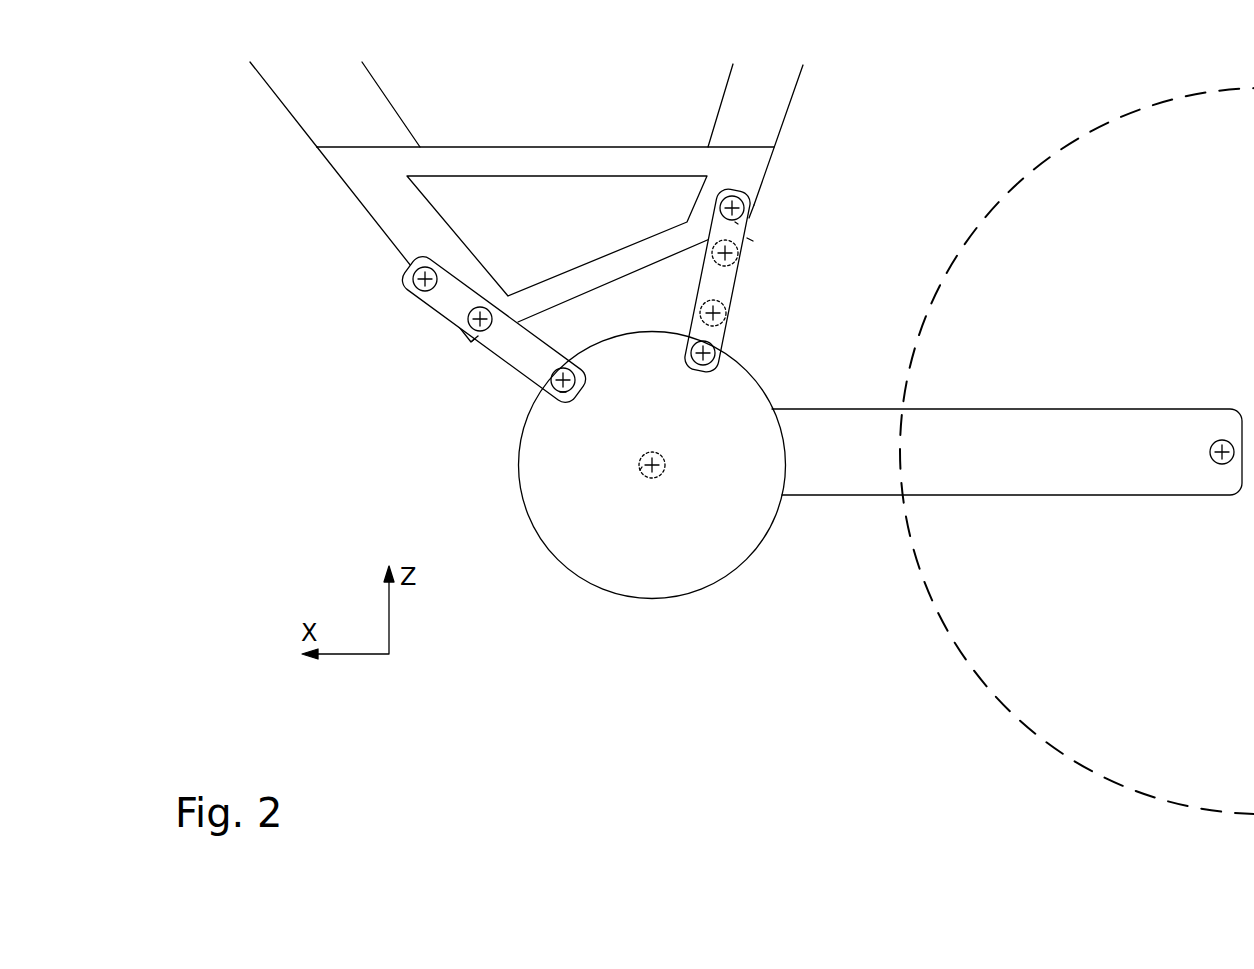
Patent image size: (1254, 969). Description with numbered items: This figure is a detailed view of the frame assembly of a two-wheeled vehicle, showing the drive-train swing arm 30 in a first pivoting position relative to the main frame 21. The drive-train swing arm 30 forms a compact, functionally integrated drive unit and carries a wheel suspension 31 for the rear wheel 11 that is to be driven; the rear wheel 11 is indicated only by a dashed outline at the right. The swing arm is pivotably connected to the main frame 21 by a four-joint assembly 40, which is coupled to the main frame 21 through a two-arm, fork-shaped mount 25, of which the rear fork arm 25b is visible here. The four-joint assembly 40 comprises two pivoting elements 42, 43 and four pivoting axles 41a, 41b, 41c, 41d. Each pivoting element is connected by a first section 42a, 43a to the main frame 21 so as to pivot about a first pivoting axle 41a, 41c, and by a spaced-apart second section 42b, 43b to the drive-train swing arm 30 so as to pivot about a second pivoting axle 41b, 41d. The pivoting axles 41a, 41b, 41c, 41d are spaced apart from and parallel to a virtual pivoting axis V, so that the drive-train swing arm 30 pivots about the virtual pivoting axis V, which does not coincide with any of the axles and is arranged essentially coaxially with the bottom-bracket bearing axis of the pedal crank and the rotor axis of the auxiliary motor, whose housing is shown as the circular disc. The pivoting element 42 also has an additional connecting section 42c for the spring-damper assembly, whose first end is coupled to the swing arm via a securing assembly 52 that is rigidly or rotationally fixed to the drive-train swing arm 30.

The rear wheel 11 is at (1104, 116).
The main frame 21 is at (352, 110).
The fork-shaped mount 25 is at (333, 168).
The rear fork arm 25b is at (372, 192).
The drive-train swing arm 30 is at (811, 530).
The wheel suspension 31 is at (852, 410).
The four-joint assembly 40 is at (385, 405).
The first pivoting axle 41a is at (468, 340).
The second pivoting axle 41b is at (565, 392).
The first pivoting axle 41c is at (745, 200).
The second pivoting axle 41d is at (714, 353).
The pivoting element 42 is at (458, 339).
The first section 42a is at (462, 320).
The second section 42b is at (548, 384).
The additional connecting section 42c is at (411, 282).
The pivoting element 43 is at (778, 271).
The first section 43a is at (735, 223).
The second section 43b is at (718, 340).
The securing assembly 52 is at (750, 246).
The virtual pivoting axis V is at (640, 470).